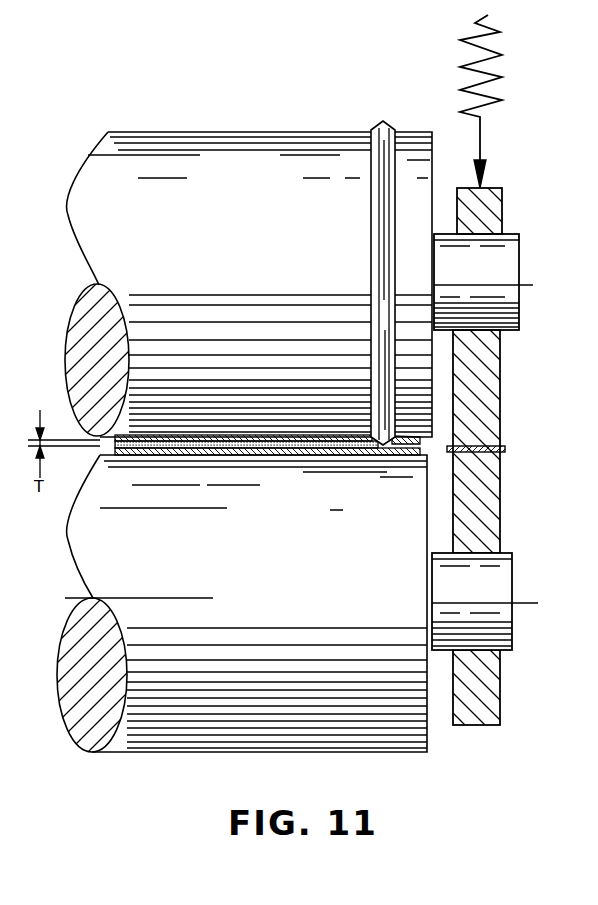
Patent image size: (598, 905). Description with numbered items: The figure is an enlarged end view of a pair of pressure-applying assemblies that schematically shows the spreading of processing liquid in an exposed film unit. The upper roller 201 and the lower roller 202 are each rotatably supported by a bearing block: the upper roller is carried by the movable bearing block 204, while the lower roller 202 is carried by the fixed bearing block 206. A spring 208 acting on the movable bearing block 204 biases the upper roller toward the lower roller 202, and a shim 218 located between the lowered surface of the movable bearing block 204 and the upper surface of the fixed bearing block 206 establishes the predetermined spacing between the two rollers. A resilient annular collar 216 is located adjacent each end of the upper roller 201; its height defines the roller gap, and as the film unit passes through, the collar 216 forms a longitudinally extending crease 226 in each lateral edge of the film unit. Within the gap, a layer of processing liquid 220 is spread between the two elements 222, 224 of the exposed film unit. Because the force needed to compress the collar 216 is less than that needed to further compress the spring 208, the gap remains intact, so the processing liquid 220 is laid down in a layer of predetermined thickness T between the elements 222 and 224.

The upper roller 201 is at (108, 170).
The roller 202 is at (82, 536).
The movable bearing block 204 is at (502, 218).
The fixed bearing block 206 is at (490, 512).
The spring 208 is at (482, 68).
The resilient annular collar 216 is at (383, 124).
The shim 218 is at (500, 450).
The processing liquid 220 is at (184, 448).
The element of exposed film unit 222 is at (250, 448).
The element of exposed film unit 224 is at (306, 455).
The longitudinally extending crease 226 is at (382, 448).